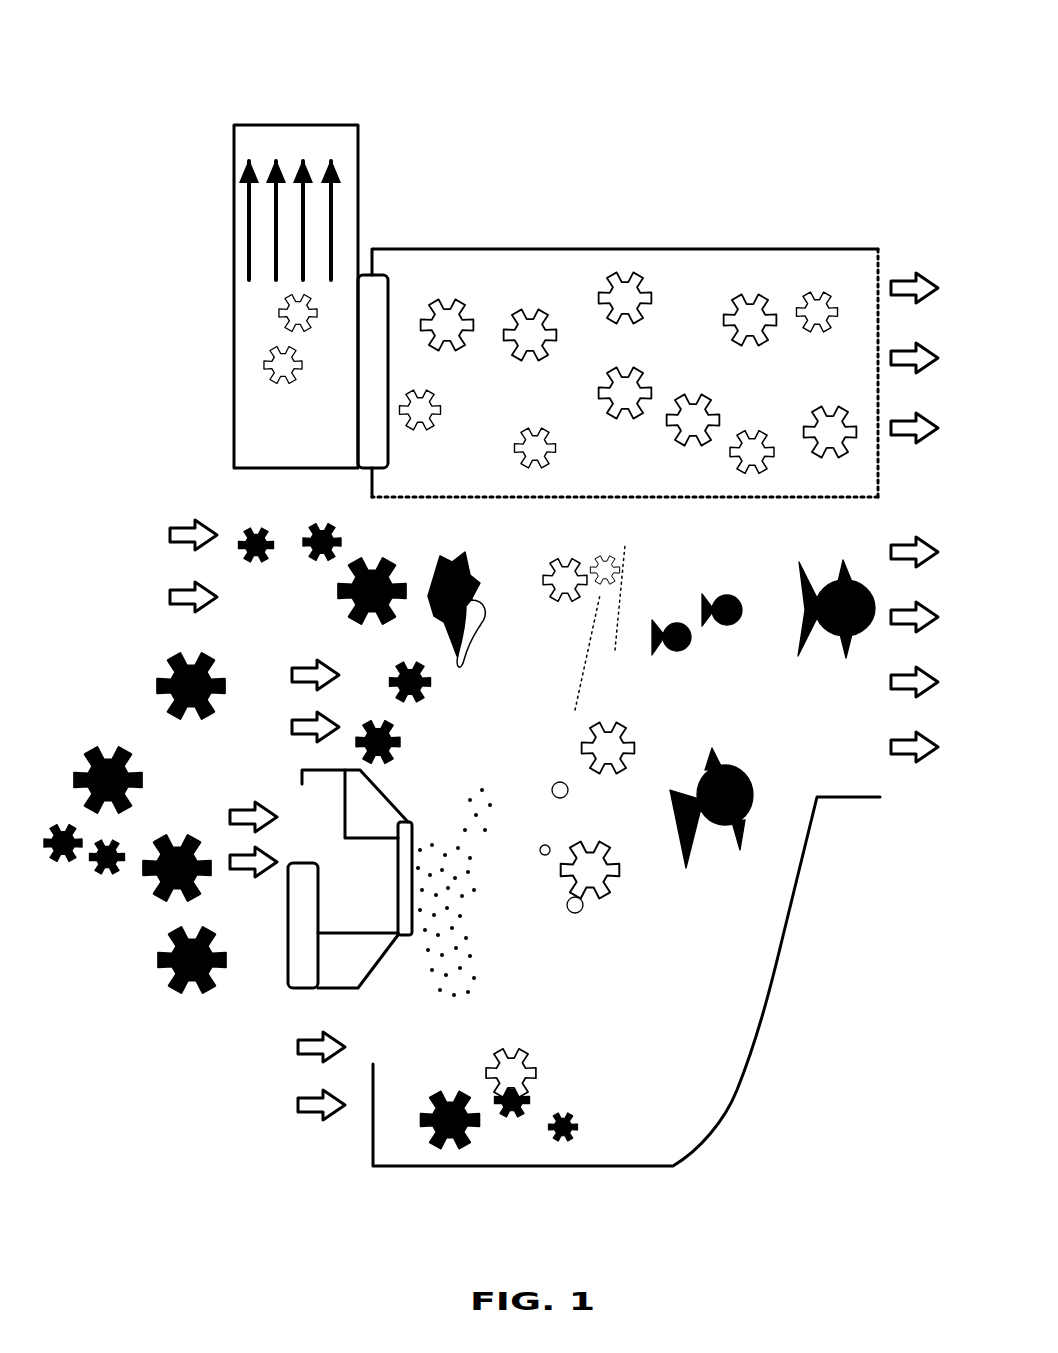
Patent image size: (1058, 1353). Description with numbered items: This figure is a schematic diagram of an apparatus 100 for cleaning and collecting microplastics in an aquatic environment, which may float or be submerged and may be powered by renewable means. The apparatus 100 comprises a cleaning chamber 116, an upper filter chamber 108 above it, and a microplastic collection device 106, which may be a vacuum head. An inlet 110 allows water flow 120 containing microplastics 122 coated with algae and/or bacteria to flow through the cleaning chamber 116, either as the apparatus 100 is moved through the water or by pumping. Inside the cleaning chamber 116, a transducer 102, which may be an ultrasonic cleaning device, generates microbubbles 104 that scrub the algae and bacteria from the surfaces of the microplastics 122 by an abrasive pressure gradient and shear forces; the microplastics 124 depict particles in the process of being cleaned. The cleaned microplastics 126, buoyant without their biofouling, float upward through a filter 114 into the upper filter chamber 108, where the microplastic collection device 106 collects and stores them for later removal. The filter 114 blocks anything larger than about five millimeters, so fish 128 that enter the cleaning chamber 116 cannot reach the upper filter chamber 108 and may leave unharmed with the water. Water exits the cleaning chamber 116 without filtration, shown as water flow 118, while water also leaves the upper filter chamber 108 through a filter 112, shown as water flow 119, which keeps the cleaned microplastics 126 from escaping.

The apparatus 100 is at (134, 56).
The transducer 102 is at (288, 958).
The microbubbles 104 is at (472, 855).
The microplastic collection device 106 is at (226, 289).
The upper filter chamber 108 is at (689, 280).
The inlet 110 is at (402, 664).
The filter 112 is at (892, 454).
The filter 114 is at (675, 502).
The cleaning chamber 116 is at (722, 950).
The water flow 118 is at (886, 675).
The water flow 119 is at (882, 304).
The water flow 120 is at (165, 590).
The microplastics 122 is at (148, 671).
The microplastics 124 is at (553, 842).
The cleaned microplastics 126 is at (716, 453).
The fish 128 is at (823, 662).